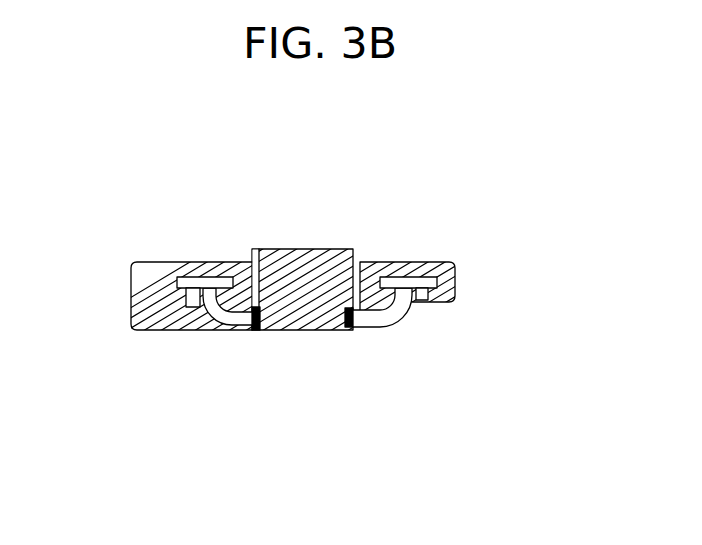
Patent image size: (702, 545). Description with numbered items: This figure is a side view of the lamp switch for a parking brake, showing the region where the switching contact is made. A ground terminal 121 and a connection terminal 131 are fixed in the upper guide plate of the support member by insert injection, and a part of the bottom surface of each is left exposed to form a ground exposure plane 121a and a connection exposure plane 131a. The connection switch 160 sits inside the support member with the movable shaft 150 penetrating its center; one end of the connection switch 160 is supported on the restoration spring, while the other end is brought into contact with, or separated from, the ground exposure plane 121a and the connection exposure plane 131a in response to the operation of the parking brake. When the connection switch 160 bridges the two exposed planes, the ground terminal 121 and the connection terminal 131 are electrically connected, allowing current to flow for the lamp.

The ground terminal 121 is at (192, 281).
The ground exposure plane 121a is at (197, 292).
The connection terminal 131 is at (384, 280).
The connection exposure plane 131a is at (423, 300).
The movable shaft 150 is at (304, 240).
The connection switch 160 is at (389, 342).